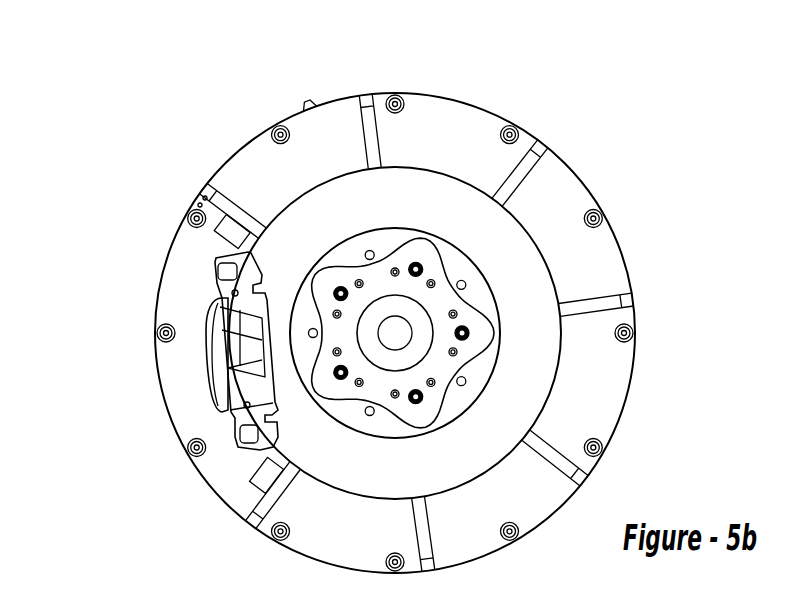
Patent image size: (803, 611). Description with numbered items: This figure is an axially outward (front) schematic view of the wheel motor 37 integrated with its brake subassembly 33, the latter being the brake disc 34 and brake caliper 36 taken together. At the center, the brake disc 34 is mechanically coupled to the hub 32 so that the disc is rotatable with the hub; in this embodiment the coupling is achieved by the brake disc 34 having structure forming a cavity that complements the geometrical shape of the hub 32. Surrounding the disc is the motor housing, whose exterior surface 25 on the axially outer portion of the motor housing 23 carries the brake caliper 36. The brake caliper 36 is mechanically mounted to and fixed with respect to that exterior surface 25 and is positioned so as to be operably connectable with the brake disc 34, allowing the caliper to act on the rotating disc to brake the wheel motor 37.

The axially outer portion of motor housing 23 is at (231, 470).
The exterior surface of motor housing 25 is at (437, 135).
The hub 32 is at (427, 253).
The brake subassembly 33 is at (47, 153).
The brake disc 34 is at (322, 223).
The brake caliper 36 is at (205, 358).
The wheel motor 37 is at (664, 151).